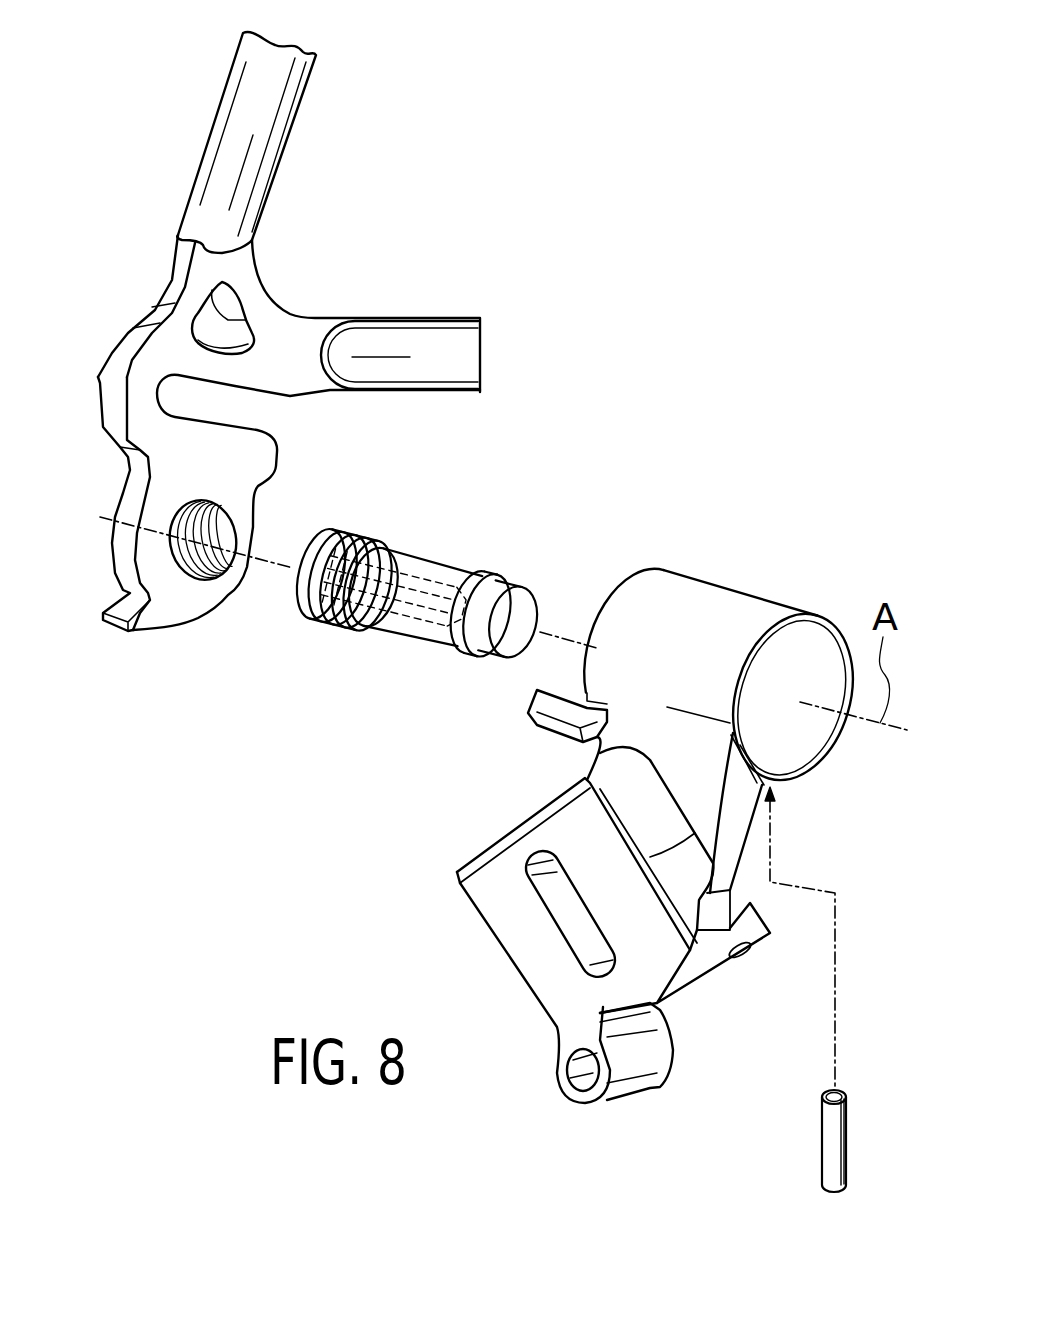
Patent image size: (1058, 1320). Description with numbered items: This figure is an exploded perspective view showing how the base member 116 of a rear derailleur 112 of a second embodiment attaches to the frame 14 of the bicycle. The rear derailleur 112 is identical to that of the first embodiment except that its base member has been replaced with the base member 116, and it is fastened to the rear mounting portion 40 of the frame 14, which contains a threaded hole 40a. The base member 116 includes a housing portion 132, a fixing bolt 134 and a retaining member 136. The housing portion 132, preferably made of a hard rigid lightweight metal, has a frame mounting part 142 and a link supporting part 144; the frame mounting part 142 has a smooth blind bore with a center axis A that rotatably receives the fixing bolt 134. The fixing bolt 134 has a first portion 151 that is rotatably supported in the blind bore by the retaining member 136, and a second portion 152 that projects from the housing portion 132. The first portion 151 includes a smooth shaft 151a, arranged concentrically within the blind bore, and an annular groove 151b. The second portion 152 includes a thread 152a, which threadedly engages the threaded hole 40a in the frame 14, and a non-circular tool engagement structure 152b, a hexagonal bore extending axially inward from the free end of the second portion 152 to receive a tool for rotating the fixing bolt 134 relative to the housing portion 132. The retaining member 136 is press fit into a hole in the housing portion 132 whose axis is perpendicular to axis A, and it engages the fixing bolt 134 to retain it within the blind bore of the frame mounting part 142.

The frame 14 is at (363, 313).
The rear mounting portion 40 is at (128, 511).
The threaded hole 40a is at (208, 542).
The rear derailleur 112 is at (753, 354).
The base member 116 is at (612, 447).
The housing portion 132 is at (700, 708).
The fixing bolt 134 is at (437, 560).
The retaining member 136 is at (820, 1145).
The frame mounting part 142 is at (797, 738).
The link supporting part 144 is at (687, 977).
The first portion 151 is at (445, 688).
The smooth shaft 151a is at (412, 640).
The annular groove 151b is at (453, 647).
The second portion 152 is at (323, 661).
The thread 152a is at (293, 618).
The non-circular tool engagement structure 152b is at (350, 627).